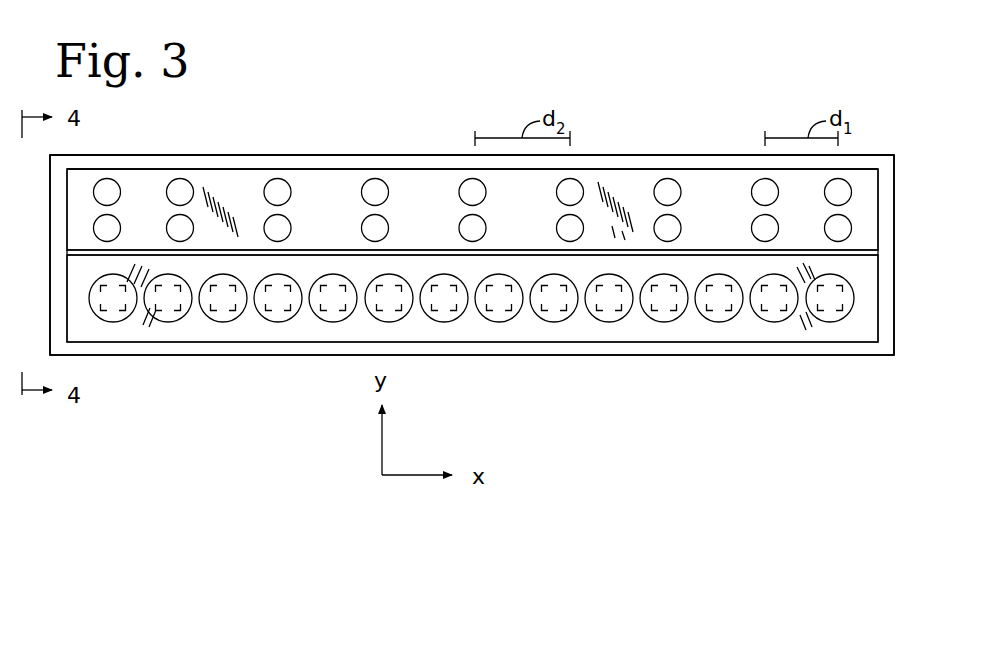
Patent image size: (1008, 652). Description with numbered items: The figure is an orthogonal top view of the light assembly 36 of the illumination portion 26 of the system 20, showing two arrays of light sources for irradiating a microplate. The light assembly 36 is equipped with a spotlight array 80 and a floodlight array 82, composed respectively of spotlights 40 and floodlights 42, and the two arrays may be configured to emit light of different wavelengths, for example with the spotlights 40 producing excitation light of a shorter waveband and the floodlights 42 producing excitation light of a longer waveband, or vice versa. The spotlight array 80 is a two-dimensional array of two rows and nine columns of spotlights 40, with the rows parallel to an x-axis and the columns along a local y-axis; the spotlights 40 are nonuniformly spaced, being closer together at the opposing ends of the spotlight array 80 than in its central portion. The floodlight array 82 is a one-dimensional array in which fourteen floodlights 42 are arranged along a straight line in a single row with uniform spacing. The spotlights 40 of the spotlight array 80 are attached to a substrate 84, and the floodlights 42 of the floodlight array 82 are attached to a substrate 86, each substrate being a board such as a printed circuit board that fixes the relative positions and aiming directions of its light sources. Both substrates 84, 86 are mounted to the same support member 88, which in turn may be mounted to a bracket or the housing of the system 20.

The system 20 is at (373, 66).
The illumination portion 26 is at (362, 111).
The light assembly 36 is at (328, 146).
The spotlights 40 is at (170, 183).
The floodlights 42 is at (208, 317).
The spotlight array 80 is at (277, 160).
The floodlight array 82 is at (287, 338).
The substrate 84 is at (451, 169).
The substrate 86 is at (500, 343).
The support member 88 is at (580, 356).